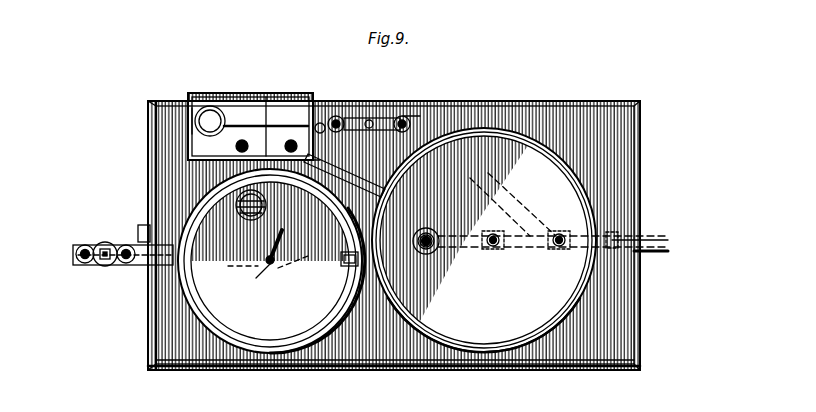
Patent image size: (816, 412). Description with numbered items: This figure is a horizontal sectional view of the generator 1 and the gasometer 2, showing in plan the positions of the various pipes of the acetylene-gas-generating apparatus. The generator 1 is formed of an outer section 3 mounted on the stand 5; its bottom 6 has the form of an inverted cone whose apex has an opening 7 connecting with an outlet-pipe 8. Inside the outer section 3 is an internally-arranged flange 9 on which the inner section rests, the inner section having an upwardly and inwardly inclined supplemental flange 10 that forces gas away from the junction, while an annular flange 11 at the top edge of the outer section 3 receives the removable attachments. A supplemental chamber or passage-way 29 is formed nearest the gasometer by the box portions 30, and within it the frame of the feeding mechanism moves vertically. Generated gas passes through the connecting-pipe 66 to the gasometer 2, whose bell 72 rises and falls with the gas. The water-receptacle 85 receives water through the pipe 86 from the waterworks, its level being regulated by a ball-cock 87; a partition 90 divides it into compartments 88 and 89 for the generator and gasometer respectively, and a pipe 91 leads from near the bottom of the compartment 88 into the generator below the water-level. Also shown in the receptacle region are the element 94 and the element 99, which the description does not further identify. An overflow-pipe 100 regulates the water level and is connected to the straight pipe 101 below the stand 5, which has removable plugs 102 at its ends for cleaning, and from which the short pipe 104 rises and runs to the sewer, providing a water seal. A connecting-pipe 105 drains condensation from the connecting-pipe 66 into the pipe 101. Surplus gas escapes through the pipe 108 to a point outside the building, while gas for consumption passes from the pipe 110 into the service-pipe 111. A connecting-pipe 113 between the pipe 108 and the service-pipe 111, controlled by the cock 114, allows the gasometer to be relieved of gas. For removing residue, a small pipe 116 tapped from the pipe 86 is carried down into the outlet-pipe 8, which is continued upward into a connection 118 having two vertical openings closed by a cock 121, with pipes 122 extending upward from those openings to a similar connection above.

The generator 1 is at (283, 360).
The gasometer 2 is at (478, 322).
The outer section 3 is at (185, 298).
The support or stand 5 is at (218, 358).
The bottom 6 is at (293, 278).
The opening 7 is at (262, 282).
The outlet-pipe 8 is at (240, 286).
The internally-arranged flange 9 is at (255, 360).
The supplemental flange 10 is at (326, 310).
The annular flange 11 is at (547, 143).
The supplemental chamber or passage-way 29 is at (333, 252).
The box portions 30 is at (335, 258).
The connecting-pipe 66 is at (428, 240).
The bell or telescoping section 72 is at (484, 240).
The water-receptacle 85 is at (250, 88).
The pipe 86 is at (331, 106).
The ball-cock 87 is at (239, 116).
The compartment 88 is at (190, 98).
The compartment 89 is at (313, 112).
The partition 90 is at (287, 116).
The pipe 91 is at (205, 158).
The ball 94 is at (205, 98).
The lever 99 is at (348, 174).
The overflow-pipe 100 is at (251, 149).
The pipe 101 is at (517, 242).
The removable plugs 102 is at (130, 222).
The short pipe 104 is at (640, 232).
The connecting-pipe 105 is at (440, 218).
The pipe 108 is at (355, 108).
The pipe 110 is at (551, 228).
The service-pipe 111 is at (410, 107).
The connecting-pipe 113 is at (402, 106).
The cock 114 is at (339, 151).
The small pipe 116 is at (271, 236).
The connection 118 is at (82, 234).
The cock 121 is at (96, 259).
The pipes 122 is at (72, 256).